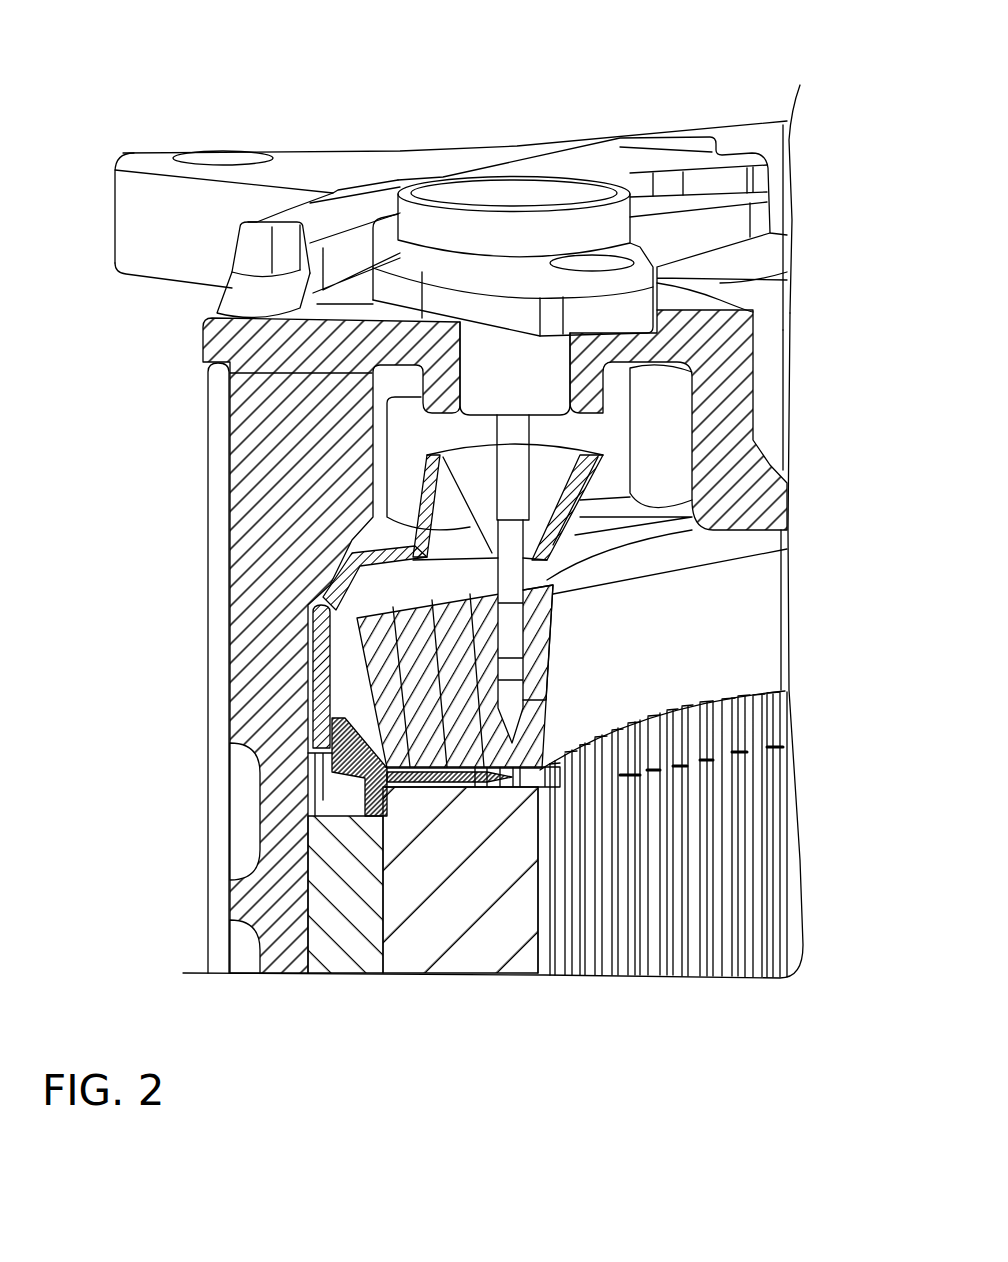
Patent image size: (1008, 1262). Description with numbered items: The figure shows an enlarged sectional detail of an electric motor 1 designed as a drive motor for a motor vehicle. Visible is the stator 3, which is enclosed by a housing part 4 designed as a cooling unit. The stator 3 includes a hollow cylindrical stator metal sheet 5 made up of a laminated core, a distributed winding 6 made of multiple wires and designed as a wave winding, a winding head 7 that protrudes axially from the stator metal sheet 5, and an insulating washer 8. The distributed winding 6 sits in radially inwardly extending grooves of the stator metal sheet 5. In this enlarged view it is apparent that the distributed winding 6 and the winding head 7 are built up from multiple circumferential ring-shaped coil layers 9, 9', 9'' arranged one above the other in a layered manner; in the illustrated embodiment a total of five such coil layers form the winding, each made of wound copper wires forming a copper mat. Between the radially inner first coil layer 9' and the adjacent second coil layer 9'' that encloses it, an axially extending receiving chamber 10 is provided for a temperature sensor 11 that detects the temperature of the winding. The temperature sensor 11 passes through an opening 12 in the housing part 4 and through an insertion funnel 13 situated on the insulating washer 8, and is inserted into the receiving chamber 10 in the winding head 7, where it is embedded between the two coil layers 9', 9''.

The electric motor 1 is at (298, 90).
The stator 3 is at (348, 978).
The housing part 4 is at (710, 347).
The stator metal sheet 5 is at (332, 893).
The distributed winding 6 is at (530, 777).
The winding head 7 is at (588, 682).
The insulating washer 8 is at (322, 628).
The coil layer 9 is at (427, 822).
The first coil layer 9' is at (697, 642).
The second coil layer 9'' is at (489, 819).
The receiving chamber 10 is at (511, 692).
The temperature sensor 11 is at (508, 640).
The opening 12 is at (458, 352).
The insertion funnel 13 is at (547, 490).